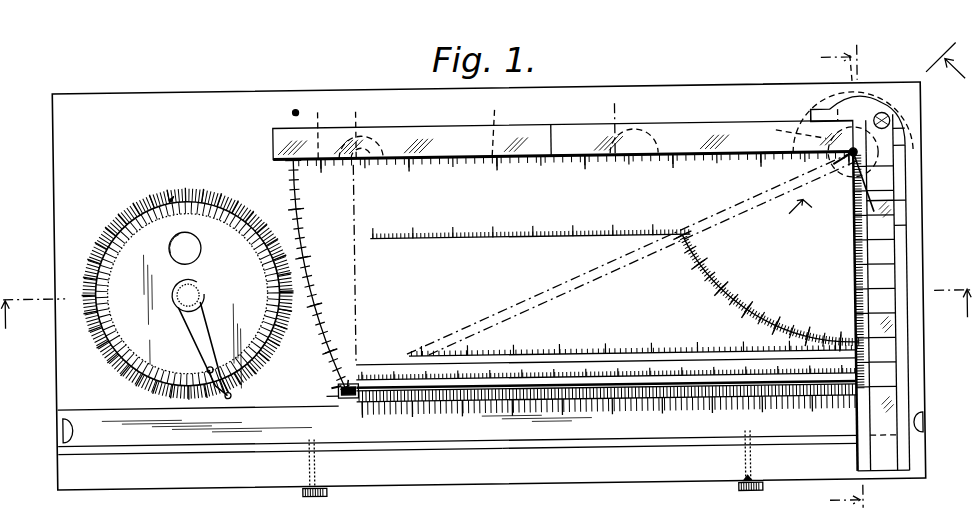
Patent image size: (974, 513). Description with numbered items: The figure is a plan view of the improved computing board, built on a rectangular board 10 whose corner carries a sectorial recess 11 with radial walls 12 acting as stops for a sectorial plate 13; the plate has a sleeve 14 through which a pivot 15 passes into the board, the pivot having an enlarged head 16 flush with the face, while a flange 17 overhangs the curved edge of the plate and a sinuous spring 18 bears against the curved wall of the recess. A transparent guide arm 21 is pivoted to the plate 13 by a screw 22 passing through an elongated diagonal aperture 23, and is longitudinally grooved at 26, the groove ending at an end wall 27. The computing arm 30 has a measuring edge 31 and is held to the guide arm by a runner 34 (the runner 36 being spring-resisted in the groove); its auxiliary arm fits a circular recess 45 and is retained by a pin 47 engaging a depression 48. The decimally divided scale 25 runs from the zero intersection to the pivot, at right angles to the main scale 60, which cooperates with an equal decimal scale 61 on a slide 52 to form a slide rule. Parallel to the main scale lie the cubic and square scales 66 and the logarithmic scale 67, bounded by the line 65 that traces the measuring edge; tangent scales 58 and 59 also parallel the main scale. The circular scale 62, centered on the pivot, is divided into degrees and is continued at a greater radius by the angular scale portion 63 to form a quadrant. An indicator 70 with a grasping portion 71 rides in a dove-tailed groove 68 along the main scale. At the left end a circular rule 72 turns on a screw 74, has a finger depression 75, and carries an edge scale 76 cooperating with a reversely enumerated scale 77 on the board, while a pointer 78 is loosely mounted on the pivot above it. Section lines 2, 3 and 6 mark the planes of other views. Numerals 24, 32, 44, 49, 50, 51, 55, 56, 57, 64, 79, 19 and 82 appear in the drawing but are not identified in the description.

The rectangular board 10 is at (690, 96).
The computing arm 30 is at (597, 125).
The pin 47 is at (495, 141).
The measuring edge 31 is at (474, 170).
The hairline index 44 is at (322, 127).
The circular recess 45 is at (360, 127).
The depression 48 is at (496, 122).
The tangent scale 58 is at (553, 126).
The hairline index 49 is at (617, 120).
The recess 50 is at (638, 133).
The angular scale portion 63 is at (318, 246).
The tangent scale 59 is at (531, 235).
The line 65 is at (591, 284).
The arm edge 64 is at (512, 306).
The circular scale 62 is at (784, 300).
The cubic and square scales 66 is at (549, 352).
The logarithmic scale 67 is at (633, 376).
The main scale 60 is at (655, 375).
The decimal scale 61 is at (676, 362).
The dove-tailed groove 68 is at (680, 414).
The slide 52 is at (477, 422).
The guide strip 51 is at (215, 441).
The guide strip 55 is at (565, 450).
The finger grips 82 is at (61, 426).
The adjusting screw 56 is at (748, 484).
The slide block 57 is at (946, 398).
The grasping portion 71 is at (333, 386).
The indicator 70 is at (347, 378).
The circular rule 72 is at (148, 368).
The reversely enumerated scale 77 is at (150, 198).
The scale 76 is at (92, 289).
The finger depression 75 is at (197, 244).
The screw 74 is at (205, 291).
The indicator hand or pointer 78 is at (200, 310).
The vertical rule 24 is at (862, 162).
The scale 25 is at (854, 268).
The sleeve 14 is at (922, 164).
The guide arm 21 is at (896, 266).
The screw 22 is at (862, 112).
The aperture 23 is at (890, 121).
The step 32 is at (822, 118).
The sectorial plate 13 is at (869, 113).
The flange 17 is at (827, 92).
The sectorial recess 11 is at (861, 69).
The radial walls 12 is at (840, 145).
The sinuous spring 18 is at (791, 128).
The enlarged head 16 is at (842, 166).
The pivot 15 is at (842, 182).
The runner 34 is at (866, 211).
The cross member 19 is at (907, 135).
The end wall 27 is at (907, 152).
The runner 36 is at (907, 206).
The rail 79 is at (907, 231).
The groove 26 is at (907, 309).
The section line 3— 3 is at (842, 274).
The section line 6— 6 is at (880, 133).
The section line 2— 2 is at (33, 318).